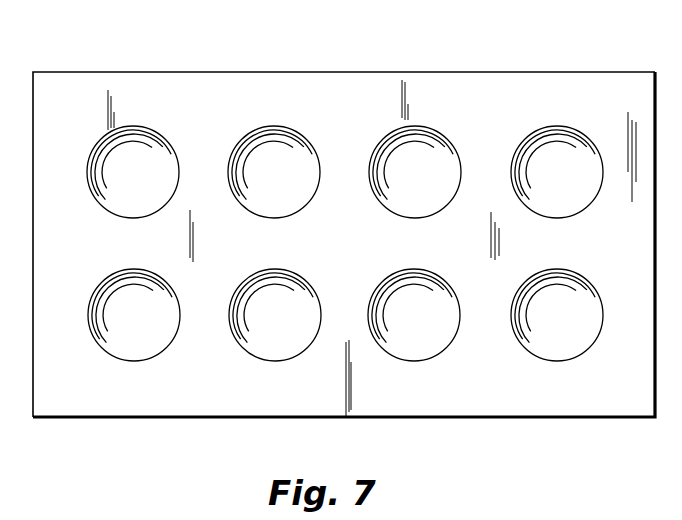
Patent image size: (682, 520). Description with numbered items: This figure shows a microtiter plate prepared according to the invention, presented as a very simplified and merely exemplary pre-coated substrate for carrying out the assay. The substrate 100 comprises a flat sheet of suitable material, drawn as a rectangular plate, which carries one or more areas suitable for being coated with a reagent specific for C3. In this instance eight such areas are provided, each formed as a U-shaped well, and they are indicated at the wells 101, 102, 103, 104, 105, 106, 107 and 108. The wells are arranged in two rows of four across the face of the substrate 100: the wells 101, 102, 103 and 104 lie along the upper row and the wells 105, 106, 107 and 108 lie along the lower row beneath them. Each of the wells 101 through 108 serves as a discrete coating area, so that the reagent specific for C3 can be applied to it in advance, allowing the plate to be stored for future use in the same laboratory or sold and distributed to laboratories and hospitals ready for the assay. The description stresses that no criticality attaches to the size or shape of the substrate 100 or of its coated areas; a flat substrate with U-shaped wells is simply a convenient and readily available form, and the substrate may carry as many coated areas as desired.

The substrate 100 is at (431, 72).
The U-shaped well 101 is at (139, 130).
The U-shaped well 102 is at (290, 134).
The U-shaped well 103 is at (444, 136).
The U-shaped well 104 is at (570, 128).
The U-shaped well 105 is at (120, 337).
The U-shaped well 106 is at (266, 337).
The U-shaped well 107 is at (419, 342).
The U-shaped well 108 is at (570, 272).